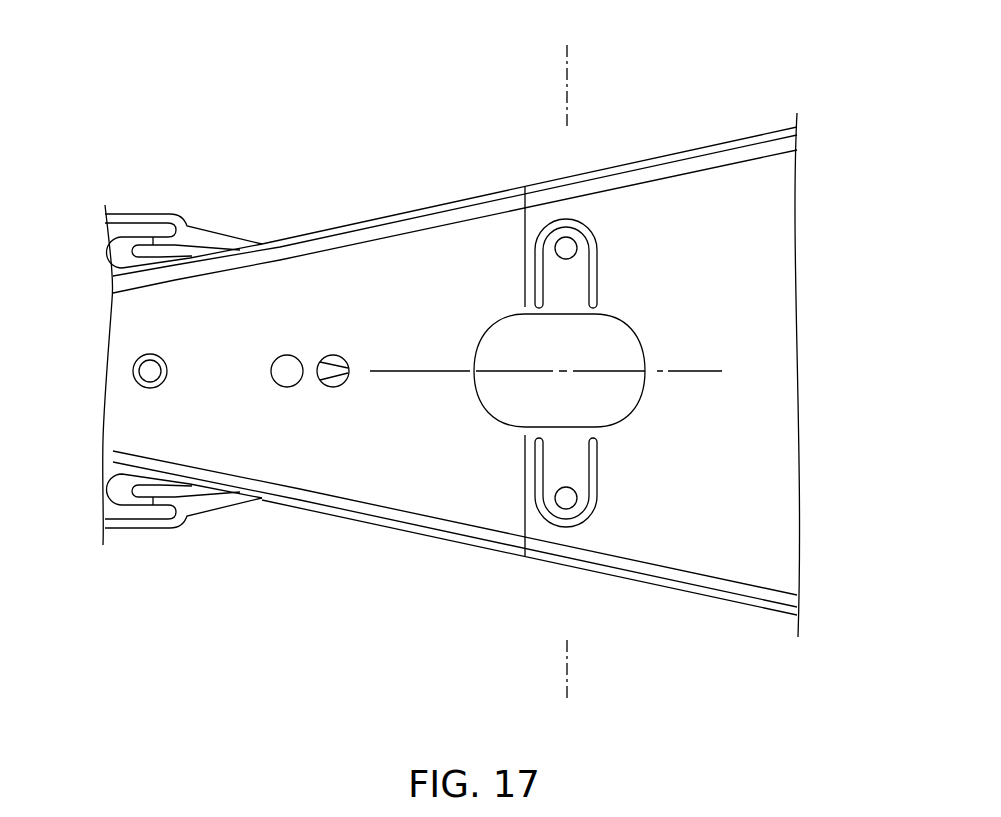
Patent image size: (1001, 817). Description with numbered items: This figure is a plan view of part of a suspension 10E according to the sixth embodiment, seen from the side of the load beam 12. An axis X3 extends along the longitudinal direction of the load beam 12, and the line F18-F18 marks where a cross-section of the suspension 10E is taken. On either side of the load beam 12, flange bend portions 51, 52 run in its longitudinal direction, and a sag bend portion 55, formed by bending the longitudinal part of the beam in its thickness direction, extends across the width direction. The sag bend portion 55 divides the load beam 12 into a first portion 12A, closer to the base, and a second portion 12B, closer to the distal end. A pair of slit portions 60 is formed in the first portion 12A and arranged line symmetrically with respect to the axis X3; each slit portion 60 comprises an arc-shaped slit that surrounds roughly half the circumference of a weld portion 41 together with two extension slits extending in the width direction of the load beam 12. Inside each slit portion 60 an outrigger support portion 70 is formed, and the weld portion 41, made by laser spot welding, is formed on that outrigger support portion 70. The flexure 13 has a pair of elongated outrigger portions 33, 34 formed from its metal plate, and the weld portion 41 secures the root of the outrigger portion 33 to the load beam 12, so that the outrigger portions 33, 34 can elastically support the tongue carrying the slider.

The suspension 10E is at (702, 120).
The load beam 12 is at (762, 130).
The first portion 12A is at (763, 365).
The second portion 12B is at (358, 478).
The flexure 13 is at (168, 206).
The outrigger portion 33 is at (227, 508).
The outrigger portion 34 is at (240, 240).
The weld portion 41 is at (566, 246).
The flange bend portion 51 is at (450, 543).
The flange bend portion 52 is at (467, 198).
The sag bend portion 55 is at (525, 272).
The slit portion 60 is at (606, 247).
The outrigger support portion 70 is at (573, 274).
The axis X3 is at (694, 370).
The line F18- F18 is at (567, 40).